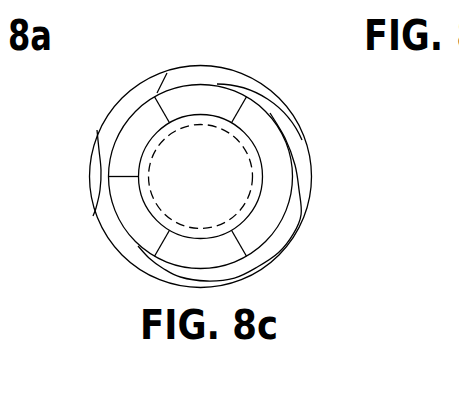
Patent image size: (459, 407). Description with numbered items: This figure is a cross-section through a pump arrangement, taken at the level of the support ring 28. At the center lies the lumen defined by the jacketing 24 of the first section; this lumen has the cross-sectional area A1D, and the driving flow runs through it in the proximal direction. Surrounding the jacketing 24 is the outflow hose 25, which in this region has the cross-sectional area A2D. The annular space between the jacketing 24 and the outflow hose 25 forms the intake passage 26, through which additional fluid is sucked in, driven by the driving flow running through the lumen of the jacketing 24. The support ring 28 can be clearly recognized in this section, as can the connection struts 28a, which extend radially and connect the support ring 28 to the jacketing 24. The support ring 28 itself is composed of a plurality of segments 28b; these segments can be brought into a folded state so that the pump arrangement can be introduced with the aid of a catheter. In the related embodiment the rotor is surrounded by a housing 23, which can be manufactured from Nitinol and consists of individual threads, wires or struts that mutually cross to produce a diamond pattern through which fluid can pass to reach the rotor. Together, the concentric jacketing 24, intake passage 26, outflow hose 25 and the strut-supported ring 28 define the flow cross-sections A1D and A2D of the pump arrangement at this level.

The housing 23 is at (140, 187).
The jacketing 24 is at (252, 142).
The outflow hose 25 is at (238, 73).
The intake passage 26 is at (174, 257).
The support ring 28 is at (197, 77).
The connection struts 28a is at (158, 93).
The segments 28b is at (300, 154).
The cross-sectional area of the lumen A1D is at (235, 177).
The cross-sectional area of the outflow hose A2D is at (133, 138).